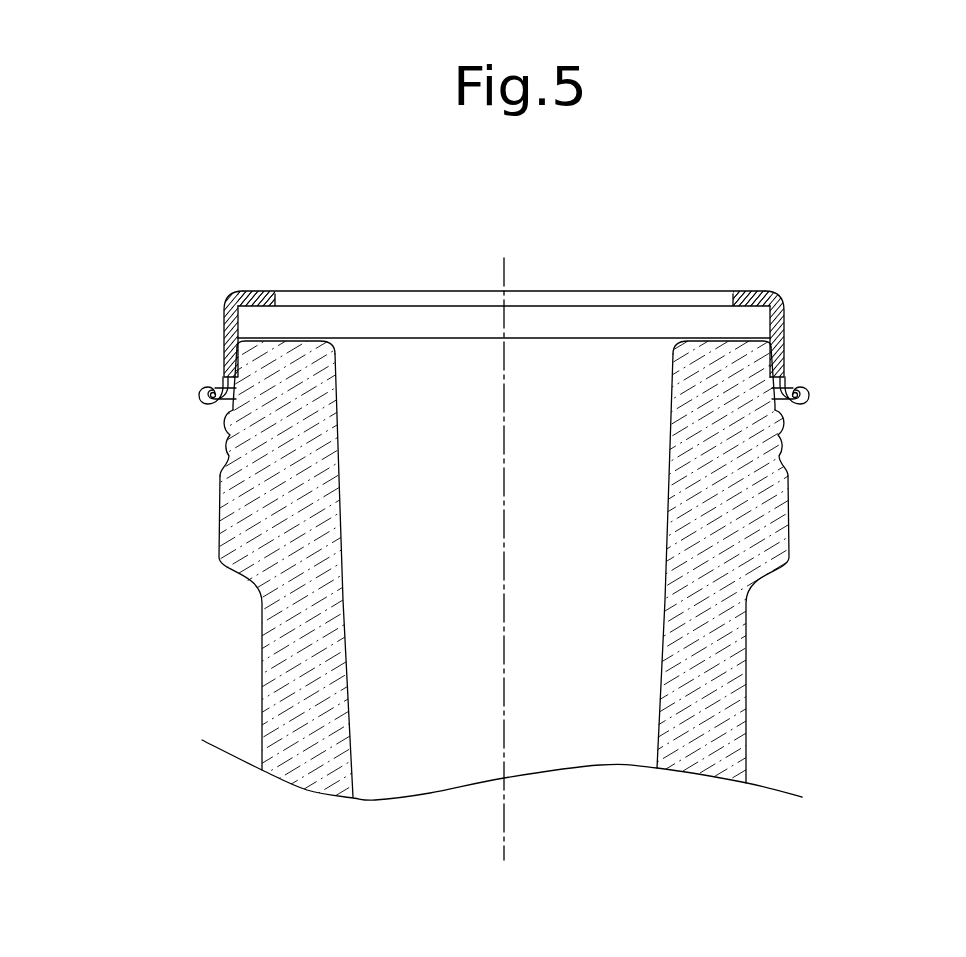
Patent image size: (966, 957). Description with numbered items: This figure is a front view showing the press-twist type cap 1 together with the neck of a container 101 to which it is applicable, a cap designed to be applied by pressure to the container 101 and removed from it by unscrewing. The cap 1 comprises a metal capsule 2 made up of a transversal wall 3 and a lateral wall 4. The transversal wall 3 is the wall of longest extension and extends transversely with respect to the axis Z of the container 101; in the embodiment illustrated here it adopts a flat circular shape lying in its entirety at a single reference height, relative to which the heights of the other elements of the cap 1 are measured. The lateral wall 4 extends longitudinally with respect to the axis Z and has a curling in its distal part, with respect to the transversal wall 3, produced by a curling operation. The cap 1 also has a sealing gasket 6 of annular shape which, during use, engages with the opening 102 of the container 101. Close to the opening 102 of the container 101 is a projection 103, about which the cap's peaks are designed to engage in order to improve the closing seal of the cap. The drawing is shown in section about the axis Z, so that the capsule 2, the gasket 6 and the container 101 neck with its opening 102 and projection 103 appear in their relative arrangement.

The cap 1 is at (553, 528).
The metal capsule 2 is at (539, 300).
The transversal wall 3 is at (370, 290).
The lateral wall 4 is at (787, 343).
The sealing gasket 6 is at (226, 322).
The container 101 is at (568, 564).
The opening 102 is at (298, 333).
The projection 103 is at (787, 423).
The axis Z is at (505, 268).